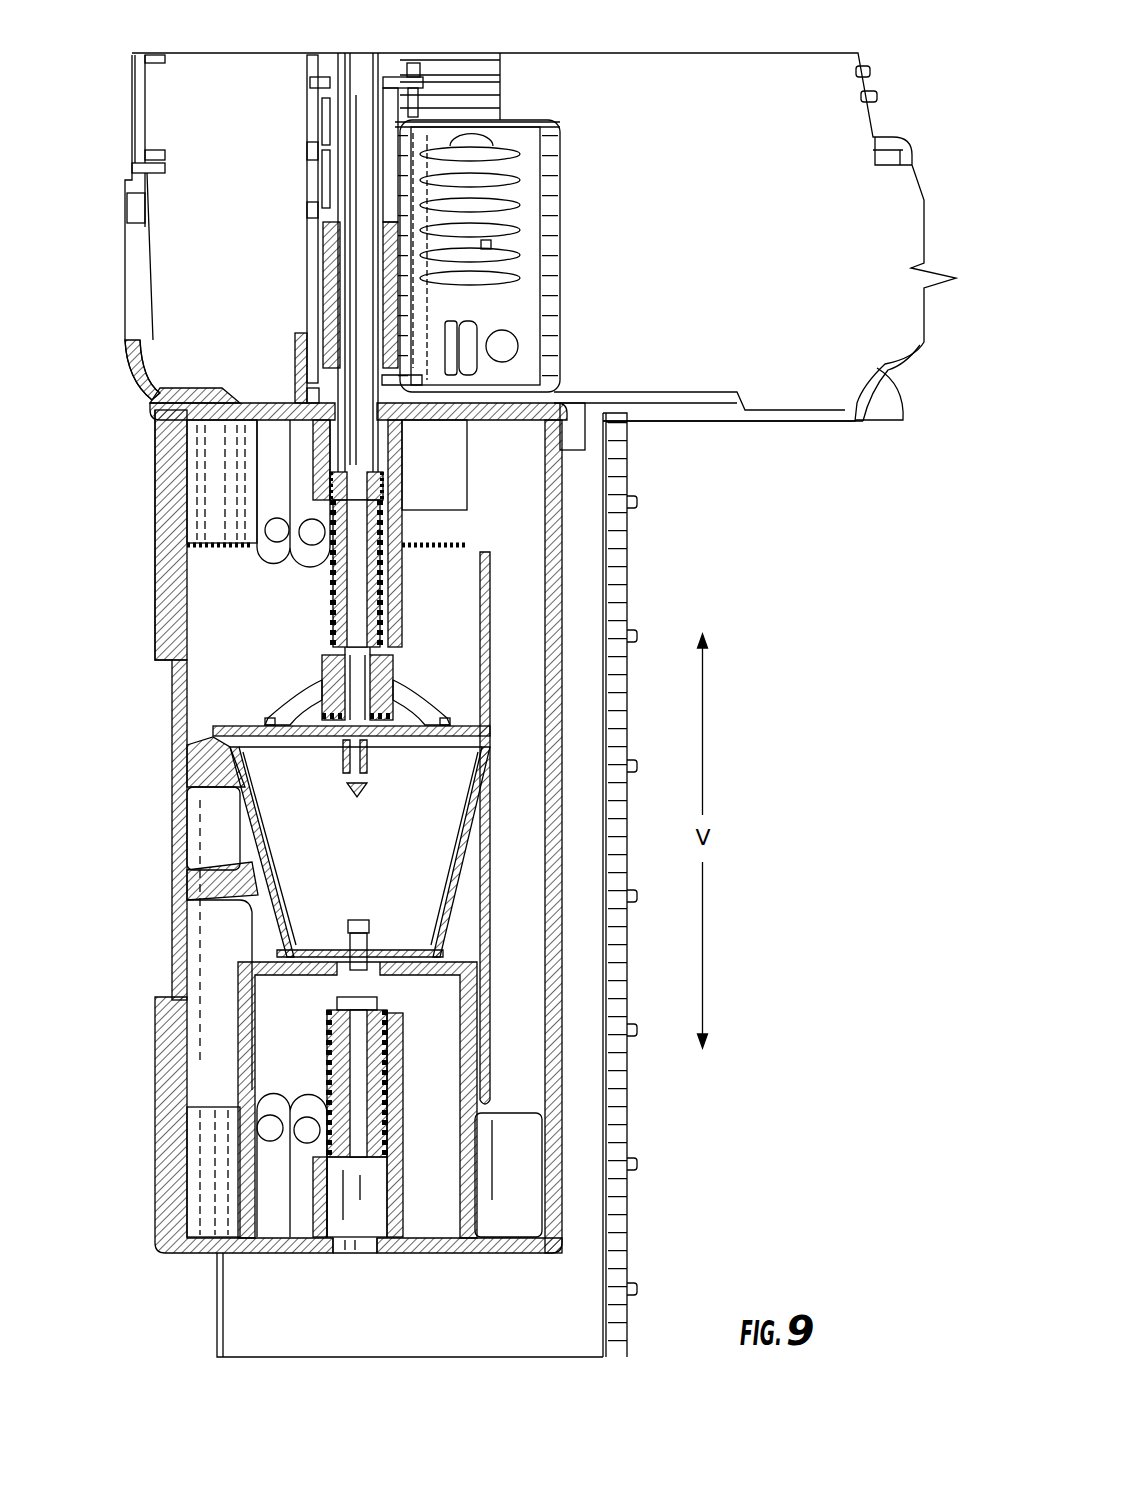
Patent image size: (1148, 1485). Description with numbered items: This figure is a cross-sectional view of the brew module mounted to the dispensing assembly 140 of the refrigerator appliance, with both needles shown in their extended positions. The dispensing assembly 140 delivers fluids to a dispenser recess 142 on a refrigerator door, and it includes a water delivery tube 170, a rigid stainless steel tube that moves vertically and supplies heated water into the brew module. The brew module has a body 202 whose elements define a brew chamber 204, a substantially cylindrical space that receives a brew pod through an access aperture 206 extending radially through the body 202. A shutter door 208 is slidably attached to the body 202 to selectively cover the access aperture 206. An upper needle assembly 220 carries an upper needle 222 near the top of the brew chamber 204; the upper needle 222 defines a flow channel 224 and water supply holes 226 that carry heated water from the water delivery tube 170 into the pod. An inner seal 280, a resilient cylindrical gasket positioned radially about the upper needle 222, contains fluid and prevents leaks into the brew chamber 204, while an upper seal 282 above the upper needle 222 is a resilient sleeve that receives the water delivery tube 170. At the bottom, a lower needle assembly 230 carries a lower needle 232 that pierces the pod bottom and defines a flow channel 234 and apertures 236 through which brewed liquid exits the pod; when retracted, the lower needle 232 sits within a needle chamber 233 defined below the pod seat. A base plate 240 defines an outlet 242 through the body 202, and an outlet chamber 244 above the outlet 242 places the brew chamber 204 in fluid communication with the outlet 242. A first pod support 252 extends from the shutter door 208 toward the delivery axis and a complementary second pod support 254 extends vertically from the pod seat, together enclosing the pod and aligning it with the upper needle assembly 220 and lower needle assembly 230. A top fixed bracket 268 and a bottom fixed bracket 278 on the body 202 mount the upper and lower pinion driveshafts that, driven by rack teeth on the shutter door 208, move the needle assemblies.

The dispensing assembly 140 is at (93, 105).
The dispenser recess 142 is at (253, 1335).
The water delivery tube 170 is at (340, 375).
The body 202 is at (157, 1190).
The brew chamber 204 is at (227, 585).
The access aperture 206 is at (168, 648).
The shutter door 208 is at (162, 763).
The upper needle assembly 220 is at (453, 630).
The upper needle 222 is at (343, 760).
The flow channel 224 is at (357, 623).
The water supply holes 226 is at (377, 777).
The lower needle assembly 230 is at (427, 1020).
The lower needle 232 is at (367, 923).
The needle chamber 233 is at (446, 1181).
The flow channel 234 is at (357, 1058).
The apertures 236 is at (343, 940).
The base plate 240 is at (487, 1255).
The outlet 242 is at (347, 1262).
The outlet chamber 244 is at (370, 1200).
The first pod support 252 is at (250, 930).
The second pod support 254 is at (493, 737).
The top fixed bracket 268 is at (273, 485).
The bottom fixed bracket 278 is at (277, 1188).
The inner seal 280 is at (307, 693).
The upper seal 282 is at (387, 487).